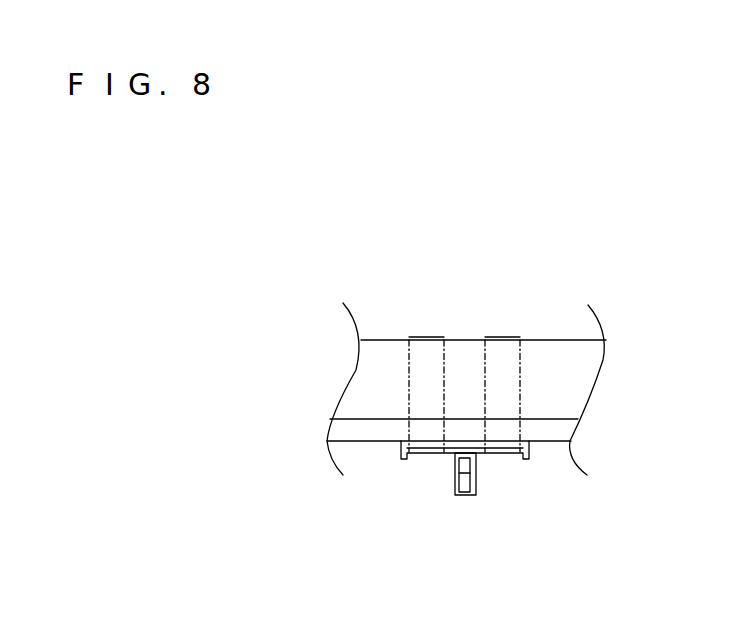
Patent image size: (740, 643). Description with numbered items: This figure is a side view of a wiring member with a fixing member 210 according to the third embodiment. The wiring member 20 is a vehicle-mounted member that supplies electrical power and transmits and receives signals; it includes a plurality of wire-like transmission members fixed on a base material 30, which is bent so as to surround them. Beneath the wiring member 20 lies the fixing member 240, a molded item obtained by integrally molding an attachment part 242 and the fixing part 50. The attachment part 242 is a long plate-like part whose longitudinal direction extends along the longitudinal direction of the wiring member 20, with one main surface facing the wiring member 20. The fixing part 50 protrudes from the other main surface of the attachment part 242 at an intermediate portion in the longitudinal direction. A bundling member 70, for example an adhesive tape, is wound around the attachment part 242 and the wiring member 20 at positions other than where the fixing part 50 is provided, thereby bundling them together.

The wiring member with a fixing member 210 is at (318, 248).
The wiring member 20 is at (544, 337).
The base material 30 is at (383, 348).
The bundling member 70 is at (490, 338).
The fixing member 240 is at (499, 544).
The attachment part 242 is at (447, 453).
The fixing part 50 is at (470, 497).